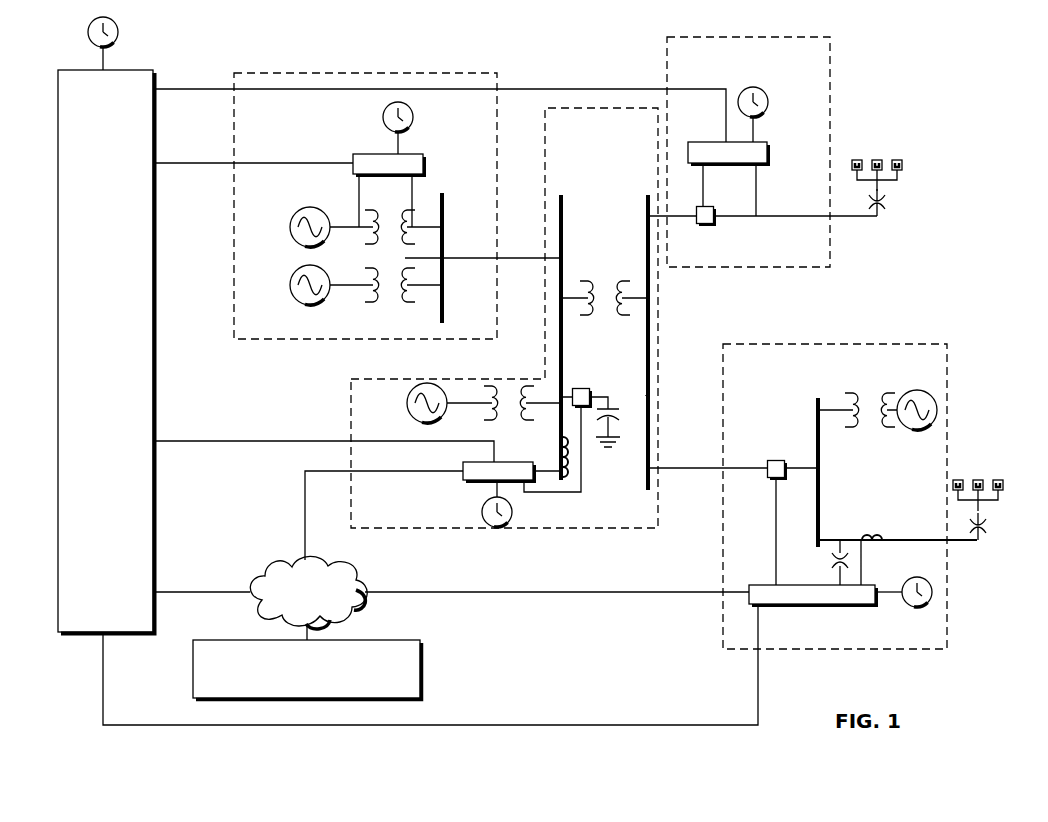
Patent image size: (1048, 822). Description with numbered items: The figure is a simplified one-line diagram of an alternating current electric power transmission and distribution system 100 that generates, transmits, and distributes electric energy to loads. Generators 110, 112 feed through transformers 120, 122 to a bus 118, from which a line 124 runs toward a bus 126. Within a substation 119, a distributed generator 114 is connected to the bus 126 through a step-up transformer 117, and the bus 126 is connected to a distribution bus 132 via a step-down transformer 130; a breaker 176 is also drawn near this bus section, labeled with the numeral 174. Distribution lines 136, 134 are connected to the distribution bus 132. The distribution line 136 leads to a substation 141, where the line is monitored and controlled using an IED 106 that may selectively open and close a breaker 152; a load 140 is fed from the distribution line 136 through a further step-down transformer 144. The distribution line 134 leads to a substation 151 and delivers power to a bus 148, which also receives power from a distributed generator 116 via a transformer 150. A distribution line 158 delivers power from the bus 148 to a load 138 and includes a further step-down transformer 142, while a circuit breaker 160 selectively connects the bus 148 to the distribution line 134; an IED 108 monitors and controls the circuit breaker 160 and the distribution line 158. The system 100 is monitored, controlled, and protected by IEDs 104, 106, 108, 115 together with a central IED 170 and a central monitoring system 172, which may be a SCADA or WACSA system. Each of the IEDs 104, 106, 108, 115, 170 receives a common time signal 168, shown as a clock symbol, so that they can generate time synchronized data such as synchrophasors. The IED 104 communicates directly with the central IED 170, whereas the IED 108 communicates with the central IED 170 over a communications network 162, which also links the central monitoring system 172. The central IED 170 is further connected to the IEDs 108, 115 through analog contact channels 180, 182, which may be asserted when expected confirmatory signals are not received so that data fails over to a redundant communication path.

The electric power delivery system 100 is at (928, 87).
The IED 104 is at (371, 154).
The IED 106 is at (703, 142).
The IED 108 is at (851, 605).
The generator 110 is at (290, 222).
The generator 112 is at (290, 280).
The generator 114 is at (407, 401).
The IED 115 is at (470, 480).
The distributed generator 116 is at (905, 428).
The step-up transformer 117 is at (490, 411).
The bus 118 is at (447, 301).
The substation 119 is at (351, 403).
The transformer 120 is at (368, 241).
The transformer 122 is at (390, 302).
The line 124 is at (511, 259).
The bus 126 is at (566, 319).
The step-down transformer 130 is at (612, 284).
The distribution bus 132 is at (646, 460).
The distribution line 134 is at (732, 469).
The distribution line 136 is at (697, 219).
The load 138 is at (982, 479).
The load 140 is at (904, 163).
The substation 141 is at (815, 268).
The step-down transformer 142 is at (985, 523).
The step-down transformer 144 is at (887, 197).
The bus 148 is at (816, 401).
The transformer 150 is at (872, 394).
The substation 151 is at (896, 650).
The breaker 152 is at (716, 221).
The distribution line 158 is at (875, 538).
The circuit breaker 160 is at (778, 460).
The communications network 162 is at (451, 555).
The common time signal 168 is at (118, 32).
The central IED 170 is at (106, 352).
The central monitoring system 172 is at (307, 670).
The bus section 174 is at (633, 386).
The breaker 176 is at (578, 390).
The analog contact channel 180 is at (593, 725).
The analog contact channel 182 is at (251, 441).